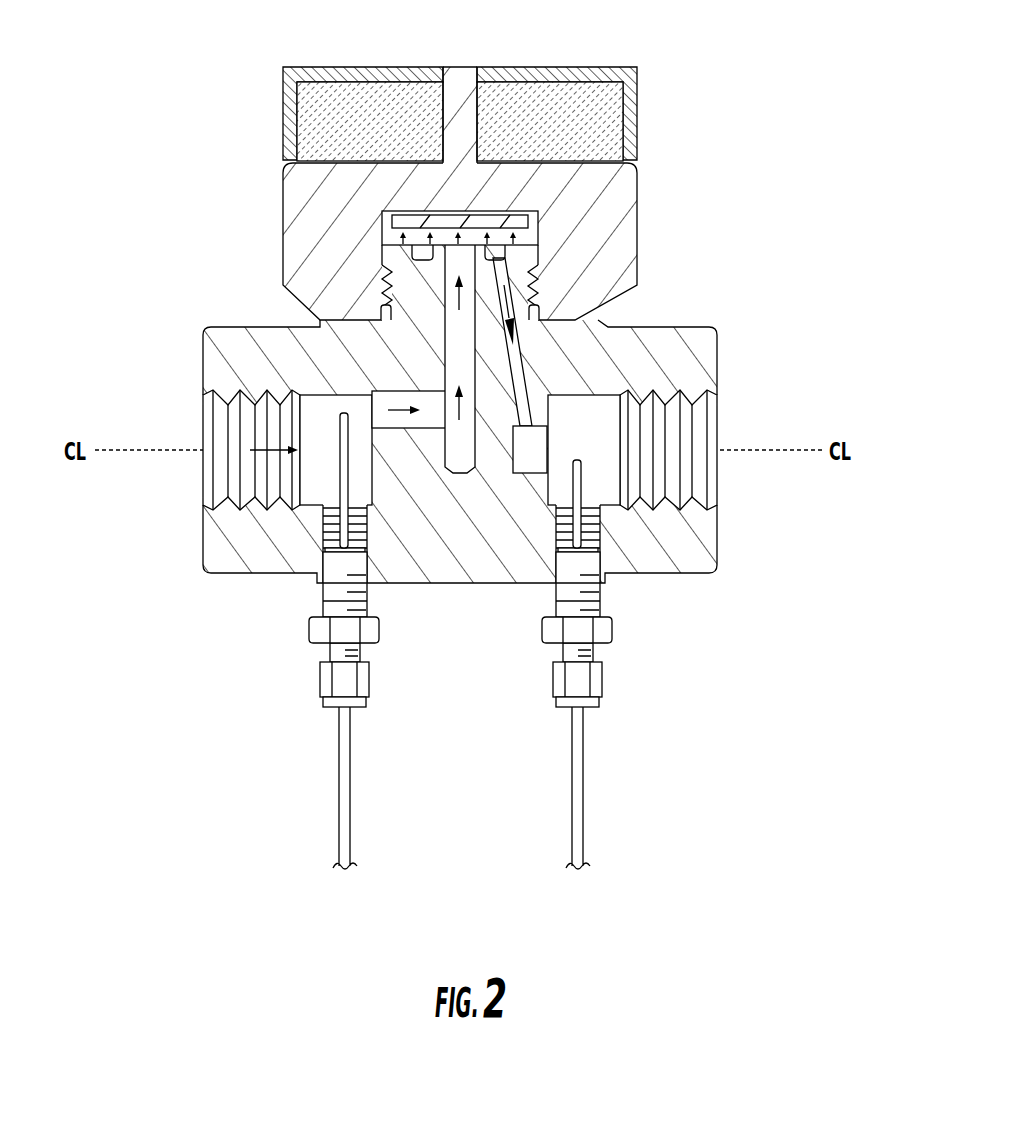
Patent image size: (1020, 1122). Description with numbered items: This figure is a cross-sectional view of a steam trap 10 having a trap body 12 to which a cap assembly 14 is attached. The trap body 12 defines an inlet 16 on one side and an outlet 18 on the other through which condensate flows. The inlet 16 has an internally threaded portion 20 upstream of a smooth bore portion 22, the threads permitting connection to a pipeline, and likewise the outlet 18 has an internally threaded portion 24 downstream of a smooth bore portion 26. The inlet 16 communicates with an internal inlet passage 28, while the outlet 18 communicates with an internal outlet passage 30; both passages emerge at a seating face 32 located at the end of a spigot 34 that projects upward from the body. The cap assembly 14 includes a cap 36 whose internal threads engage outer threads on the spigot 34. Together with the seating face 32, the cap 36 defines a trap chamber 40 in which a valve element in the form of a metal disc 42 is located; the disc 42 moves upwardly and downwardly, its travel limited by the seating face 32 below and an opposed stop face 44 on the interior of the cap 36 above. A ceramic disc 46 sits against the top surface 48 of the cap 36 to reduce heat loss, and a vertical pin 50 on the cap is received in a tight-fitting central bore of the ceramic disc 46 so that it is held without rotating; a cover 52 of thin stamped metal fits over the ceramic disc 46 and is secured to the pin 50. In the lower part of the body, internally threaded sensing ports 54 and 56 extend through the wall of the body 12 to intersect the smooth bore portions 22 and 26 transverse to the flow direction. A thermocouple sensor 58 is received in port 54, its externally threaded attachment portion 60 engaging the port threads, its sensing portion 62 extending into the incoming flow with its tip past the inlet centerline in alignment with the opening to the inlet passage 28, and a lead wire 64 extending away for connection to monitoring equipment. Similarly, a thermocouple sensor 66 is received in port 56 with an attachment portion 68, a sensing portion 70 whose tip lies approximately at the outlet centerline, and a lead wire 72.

The steam trap 10 is at (243, 136).
The trap body 12 is at (455, 585).
The cap assembly 14 is at (662, 116).
The inlet 16 is at (178, 423).
The outlet 18 is at (741, 441).
The internally threaded portion 20 is at (220, 492).
The smooth bore portion 22 is at (313, 490).
The internally threaded portion 24 is at (708, 497).
The smooth bore portion 26 is at (603, 493).
The inlet passage 28 is at (457, 378).
The outlet passage 30 is at (520, 378).
The seating face 32 is at (537, 232).
The spigot 34 is at (537, 253).
The cap 36 is at (292, 196).
The trap chamber 40 is at (392, 240).
The metal disc 42 is at (540, 222).
The stop face 44 is at (392, 218).
The ceramic disc 46 is at (330, 80).
The top surface 48 is at (365, 160).
The vertical pin 50 is at (458, 67).
The cover 52 is at (590, 67).
The sensing port 54 is at (360, 537).
The sensing port 56 is at (555, 537).
The thermocouple sensor 58 is at (296, 624).
The attachment portion 60 is at (367, 598).
The sensing portion 62 is at (340, 427).
The lead wire 64 is at (348, 813).
The thermocouple sensor 66 is at (636, 638).
The attachment portion 68 is at (558, 588).
The sensing portion 70 is at (582, 483).
The lead wire 72 is at (580, 812).